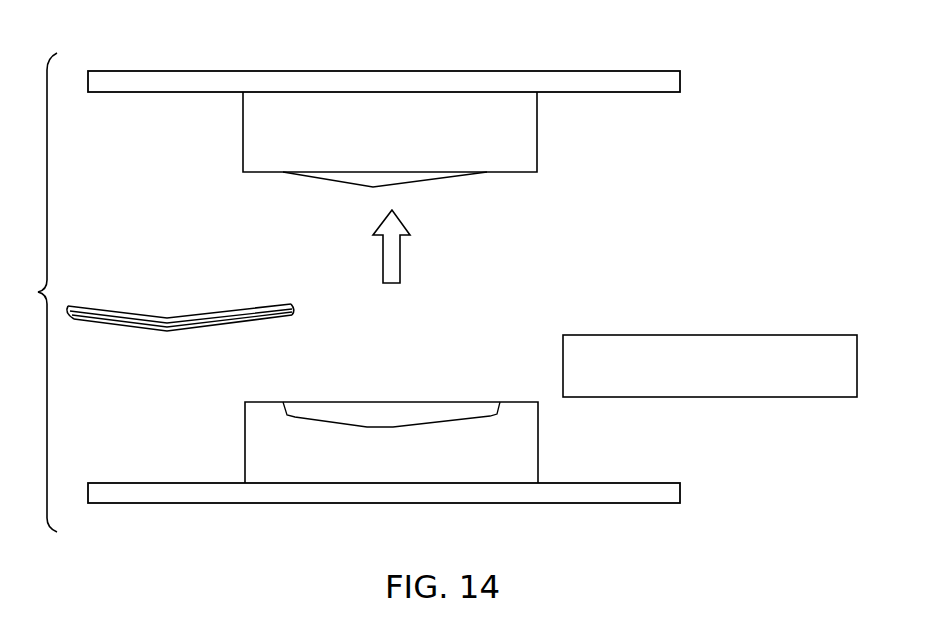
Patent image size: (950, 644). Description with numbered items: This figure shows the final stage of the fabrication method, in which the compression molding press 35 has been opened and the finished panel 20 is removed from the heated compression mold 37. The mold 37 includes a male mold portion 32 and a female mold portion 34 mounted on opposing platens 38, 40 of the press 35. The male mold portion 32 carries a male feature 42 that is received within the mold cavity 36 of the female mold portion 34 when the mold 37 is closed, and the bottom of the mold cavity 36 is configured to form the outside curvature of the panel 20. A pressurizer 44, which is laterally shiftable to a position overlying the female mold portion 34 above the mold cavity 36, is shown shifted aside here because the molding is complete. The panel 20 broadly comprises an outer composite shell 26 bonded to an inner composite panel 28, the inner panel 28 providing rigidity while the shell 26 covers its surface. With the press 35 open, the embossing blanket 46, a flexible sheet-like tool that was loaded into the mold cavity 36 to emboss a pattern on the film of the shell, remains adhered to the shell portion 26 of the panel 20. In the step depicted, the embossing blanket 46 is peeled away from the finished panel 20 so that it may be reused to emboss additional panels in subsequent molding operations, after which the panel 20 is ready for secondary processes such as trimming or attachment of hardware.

The panel 20 is at (180, 311).
The outer composite shell 26 is at (152, 328).
The inner composite panel 28 is at (222, 315).
The male mold portion 32 is at (520, 125).
The female mold portion 34 is at (515, 450).
The compression molding press 35 is at (36, 292).
The mold cavity 36 is at (425, 403).
The heated compression mold 37 is at (694, 194).
The platen 38 is at (167, 80).
The platen 40 is at (183, 495).
The male feature 42 is at (452, 194).
The pressurizer 44 is at (707, 357).
The embossing blanket 46 is at (98, 325).